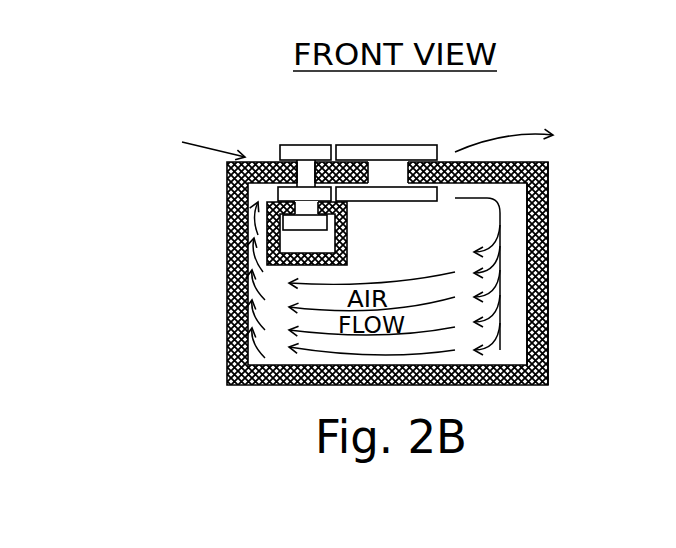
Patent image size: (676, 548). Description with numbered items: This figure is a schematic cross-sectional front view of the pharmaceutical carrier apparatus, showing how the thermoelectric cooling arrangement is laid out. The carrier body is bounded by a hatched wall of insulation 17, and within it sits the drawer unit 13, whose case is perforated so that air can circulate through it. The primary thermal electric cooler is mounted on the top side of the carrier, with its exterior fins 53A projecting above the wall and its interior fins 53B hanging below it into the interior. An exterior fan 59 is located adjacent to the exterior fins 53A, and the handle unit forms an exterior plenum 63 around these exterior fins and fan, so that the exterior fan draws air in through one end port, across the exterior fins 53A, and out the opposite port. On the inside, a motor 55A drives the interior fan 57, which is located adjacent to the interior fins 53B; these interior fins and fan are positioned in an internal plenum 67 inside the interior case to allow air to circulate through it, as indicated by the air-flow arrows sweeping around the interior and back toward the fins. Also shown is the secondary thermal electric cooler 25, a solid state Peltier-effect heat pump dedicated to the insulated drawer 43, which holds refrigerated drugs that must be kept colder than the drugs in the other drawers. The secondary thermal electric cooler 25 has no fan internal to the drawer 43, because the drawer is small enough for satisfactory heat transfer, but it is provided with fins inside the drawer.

The drawer unit 13 is at (497, 357).
The insulation 17 is at (553, 255).
The secondary thermal electric cooler 25 is at (322, 228).
The insulated drawer 43 is at (287, 239).
The exterior fins 53A is at (432, 138).
The interior fins 53B is at (414, 204).
The motor 55A is at (324, 200).
The interior fan 57 is at (279, 193).
The exterior fan 59 is at (270, 152).
The exterior plenum 63 is at (563, 125).
The internal plenum 67 is at (503, 198).